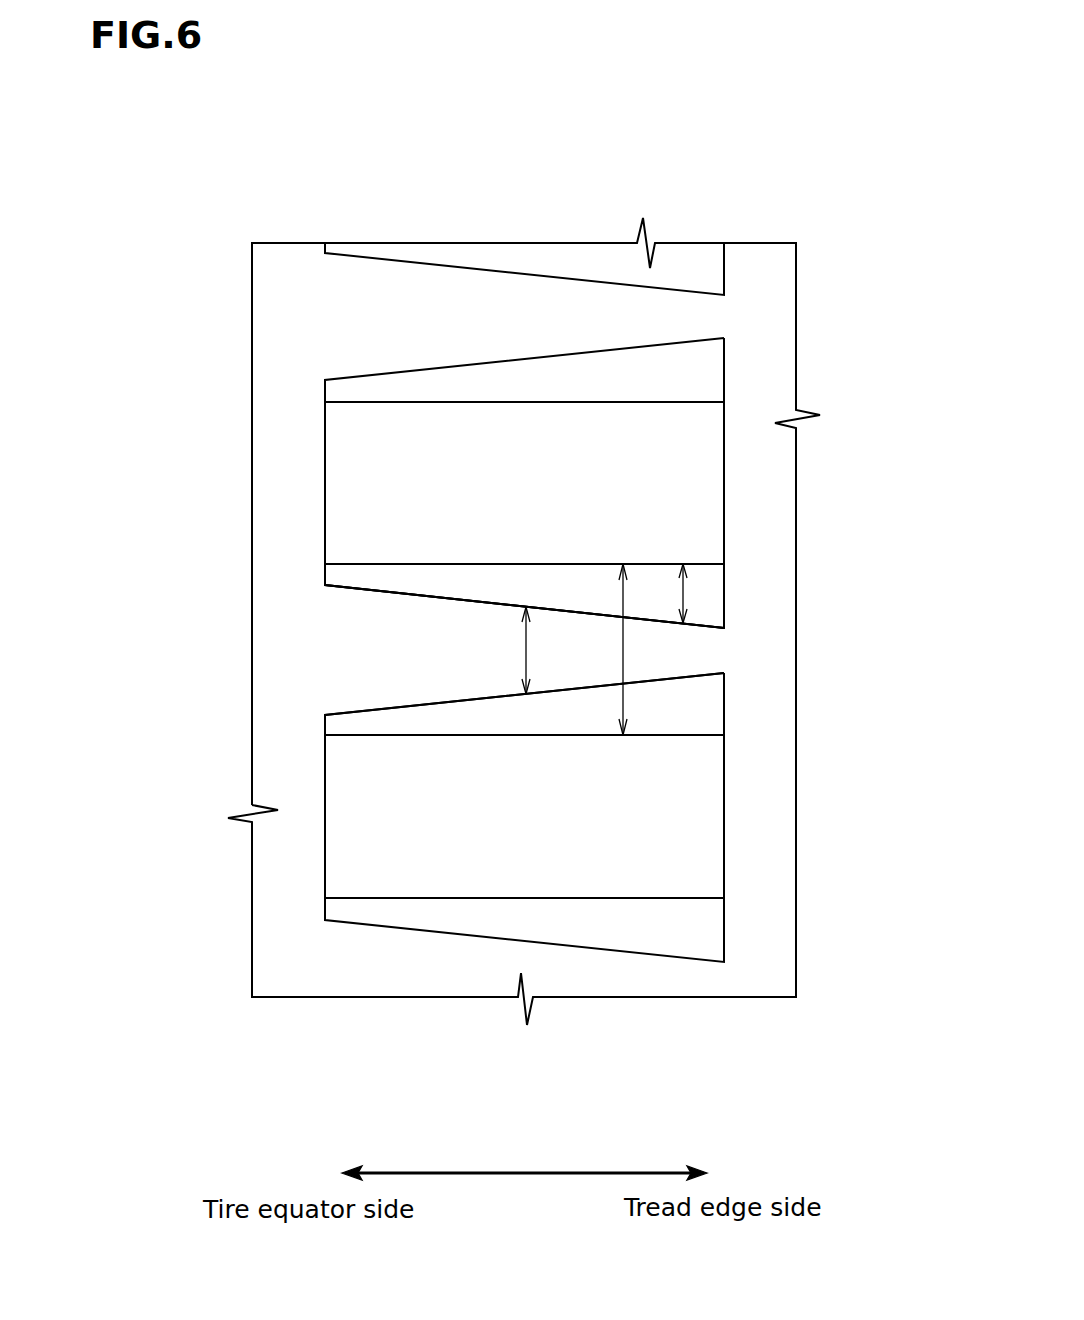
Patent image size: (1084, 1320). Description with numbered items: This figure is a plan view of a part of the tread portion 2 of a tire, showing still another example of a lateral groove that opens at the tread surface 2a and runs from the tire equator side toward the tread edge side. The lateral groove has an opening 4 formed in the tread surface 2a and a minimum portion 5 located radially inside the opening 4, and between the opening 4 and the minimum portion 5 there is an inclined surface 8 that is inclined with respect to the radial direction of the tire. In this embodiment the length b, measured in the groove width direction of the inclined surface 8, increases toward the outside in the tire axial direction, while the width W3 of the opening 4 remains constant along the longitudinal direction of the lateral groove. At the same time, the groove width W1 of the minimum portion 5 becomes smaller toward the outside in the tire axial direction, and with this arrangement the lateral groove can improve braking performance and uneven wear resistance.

The tread portion 2 is at (722, 213).
The tread surface 2a is at (446, 497).
The opening 4 is at (565, 563).
The minimum portion 5 is at (388, 595).
The inclined surface 8 is at (652, 583).
The length in the groove width direction of the inclined surface b is at (683, 595).
The width of the opening W3 is at (623, 650).
The groove width of the minimum portion W1 is at (526, 650).